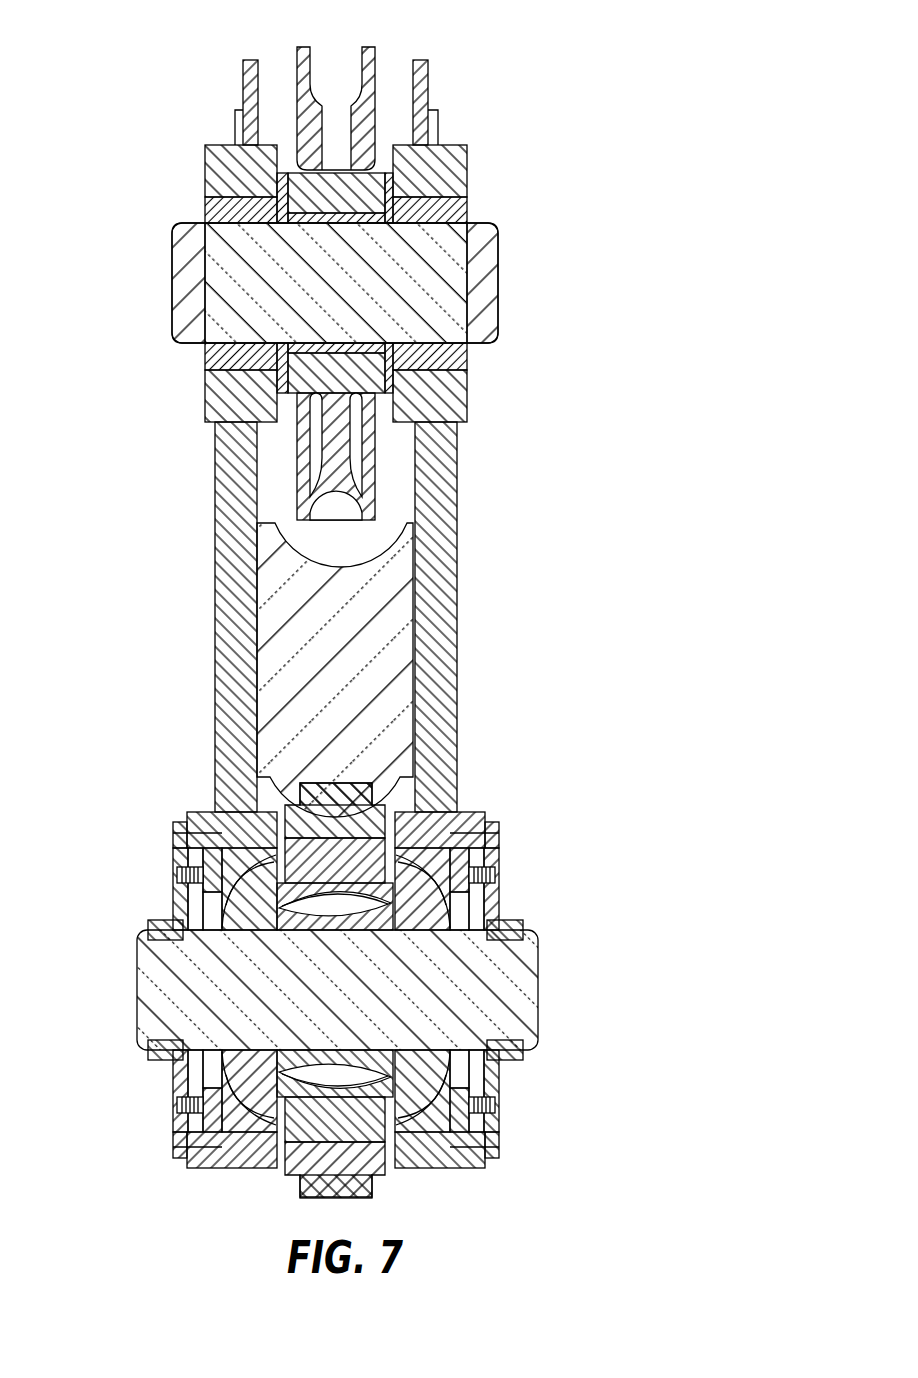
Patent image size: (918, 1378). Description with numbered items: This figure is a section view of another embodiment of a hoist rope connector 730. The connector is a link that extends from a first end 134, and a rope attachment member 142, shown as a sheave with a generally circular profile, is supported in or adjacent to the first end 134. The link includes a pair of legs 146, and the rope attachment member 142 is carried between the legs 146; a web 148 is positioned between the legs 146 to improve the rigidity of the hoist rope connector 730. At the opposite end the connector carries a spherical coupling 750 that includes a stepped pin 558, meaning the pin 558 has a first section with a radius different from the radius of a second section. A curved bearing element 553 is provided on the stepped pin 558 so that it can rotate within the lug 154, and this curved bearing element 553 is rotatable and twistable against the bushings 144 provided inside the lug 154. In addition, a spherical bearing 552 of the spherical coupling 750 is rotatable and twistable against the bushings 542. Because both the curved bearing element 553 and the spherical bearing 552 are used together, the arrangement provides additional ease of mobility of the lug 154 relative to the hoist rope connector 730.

The first end 134 is at (222, 155).
The rope attachment member 142 is at (360, 85).
The bushings 144 is at (357, 847).
The legs 146 is at (437, 505).
The web 148 is at (390, 585).
The lug 154 is at (325, 800).
The bushings 542 is at (283, 847).
The spherical bearing 552 is at (432, 895).
The curved bearing element 553 is at (330, 1067).
The stepped pin 558 is at (155, 975).
The hoist rope connector 730 is at (599, 288).
The spherical coupling 750 is at (476, 895).